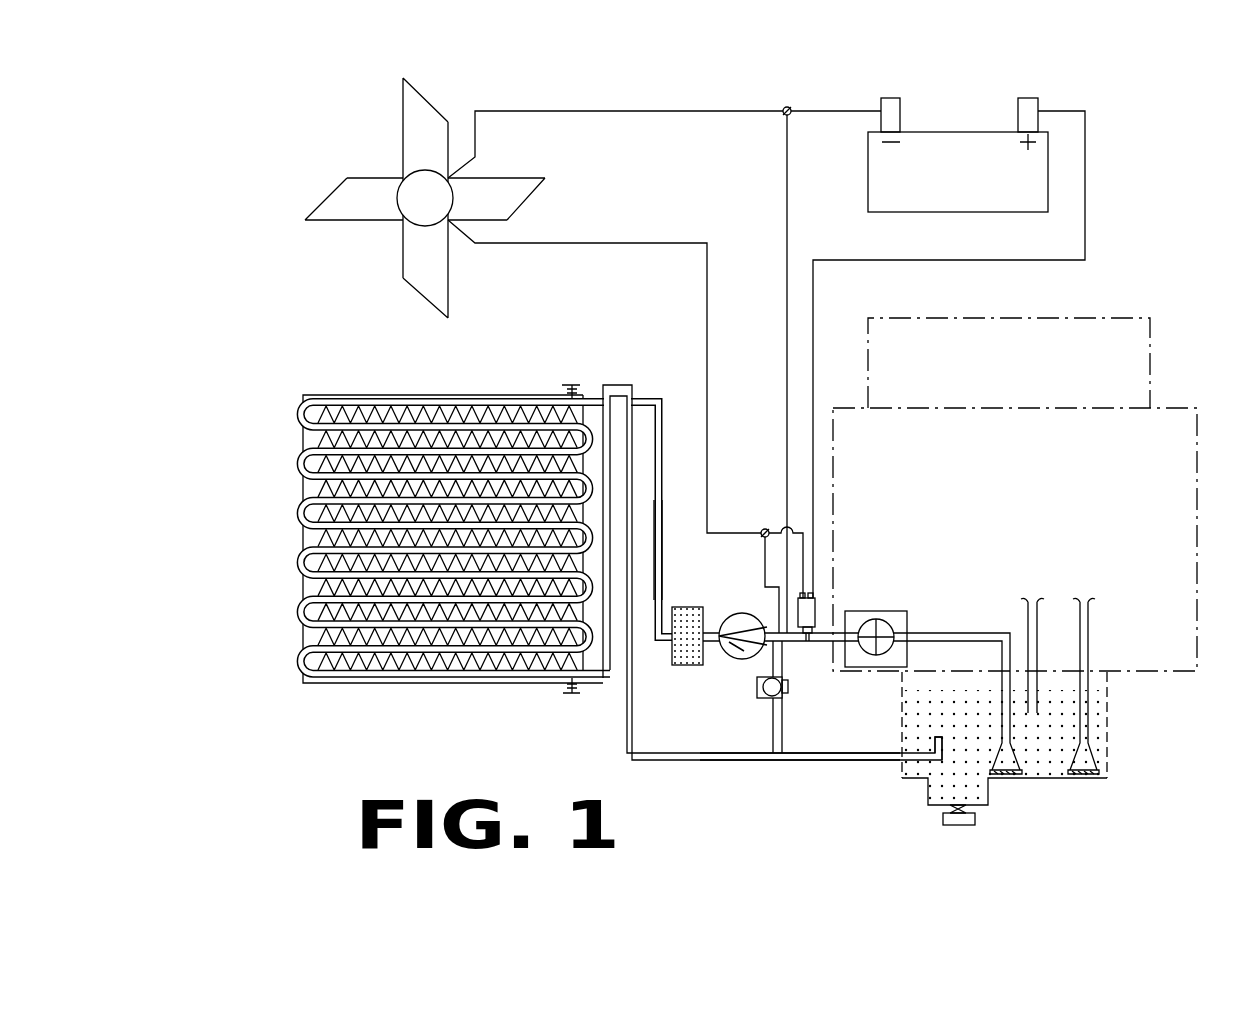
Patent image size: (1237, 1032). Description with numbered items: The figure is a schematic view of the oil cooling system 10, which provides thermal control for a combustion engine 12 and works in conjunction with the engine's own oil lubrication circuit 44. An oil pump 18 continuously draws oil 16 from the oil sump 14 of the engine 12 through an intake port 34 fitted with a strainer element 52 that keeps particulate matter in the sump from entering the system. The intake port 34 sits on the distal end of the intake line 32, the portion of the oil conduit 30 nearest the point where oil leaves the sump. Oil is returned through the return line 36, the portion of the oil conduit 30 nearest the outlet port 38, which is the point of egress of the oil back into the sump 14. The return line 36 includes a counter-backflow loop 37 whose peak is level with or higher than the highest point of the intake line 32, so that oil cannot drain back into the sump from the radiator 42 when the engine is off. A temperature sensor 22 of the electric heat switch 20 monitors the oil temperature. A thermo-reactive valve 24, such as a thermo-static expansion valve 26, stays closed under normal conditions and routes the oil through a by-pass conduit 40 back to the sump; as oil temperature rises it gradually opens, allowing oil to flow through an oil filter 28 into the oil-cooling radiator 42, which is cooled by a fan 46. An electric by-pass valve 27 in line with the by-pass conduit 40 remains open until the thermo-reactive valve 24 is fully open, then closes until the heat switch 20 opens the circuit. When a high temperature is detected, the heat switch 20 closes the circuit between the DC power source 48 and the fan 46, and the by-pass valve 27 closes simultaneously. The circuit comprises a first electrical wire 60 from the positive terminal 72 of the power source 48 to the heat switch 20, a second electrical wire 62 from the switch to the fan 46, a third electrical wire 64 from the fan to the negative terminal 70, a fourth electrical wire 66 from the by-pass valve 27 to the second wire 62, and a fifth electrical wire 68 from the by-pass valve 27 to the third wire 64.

The oil cooling system 10 is at (381, 324).
The engine 12 is at (1178, 408).
The oil sump 14 is at (1012, 780).
The oil 16 is at (395, 688).
The oil pump 18 is at (876, 611).
The electric heat switch 20 is at (818, 612).
The temperature sensor 22 is at (806, 640).
The thermo-reactive valve 24 is at (742, 612).
The thermo-static expansion valve 26 is at (738, 660).
The electric by-pass valve 27 is at (780, 700).
The oil filter 28 is at (685, 665).
The oil conduit 30 is at (513, 427).
The intake line 32 is at (597, 437).
The intake port 34 is at (988, 757).
The return line 36 is at (663, 480).
The counter-backflow loop 37 is at (663, 405).
The outlet port 38 is at (925, 752).
The by-pass conduit 40 is at (760, 740).
The oil-cooling radiator 42 is at (420, 395).
The oil lubrication circuit 44 is at (1160, 573).
The fan 46 is at (400, 178).
The power source 48 is at (868, 157).
The strainer element 52 is at (1003, 770).
The first electrical wire 60 is at (1087, 250).
The second electrical wire 62 is at (590, 243).
The third electrical wire 64 is at (622, 110).
The fourth electrical wire 66 is at (763, 530).
The fifth electrical wire 68 is at (786, 195).
The negative terminal 70 is at (903, 122).
The positive terminal 72 is at (1018, 122).